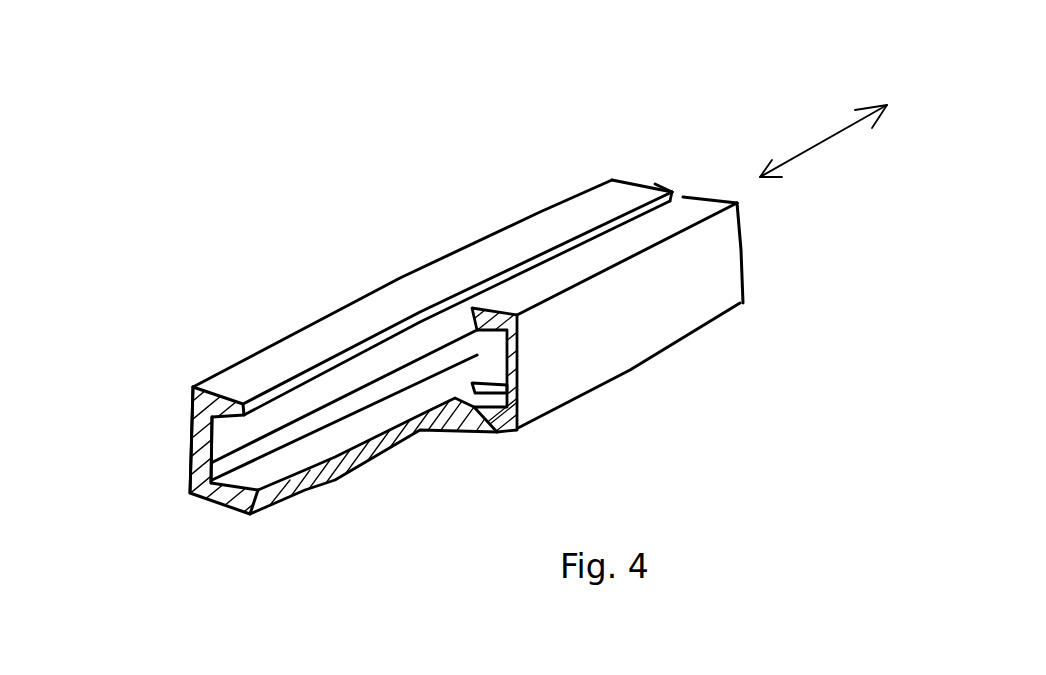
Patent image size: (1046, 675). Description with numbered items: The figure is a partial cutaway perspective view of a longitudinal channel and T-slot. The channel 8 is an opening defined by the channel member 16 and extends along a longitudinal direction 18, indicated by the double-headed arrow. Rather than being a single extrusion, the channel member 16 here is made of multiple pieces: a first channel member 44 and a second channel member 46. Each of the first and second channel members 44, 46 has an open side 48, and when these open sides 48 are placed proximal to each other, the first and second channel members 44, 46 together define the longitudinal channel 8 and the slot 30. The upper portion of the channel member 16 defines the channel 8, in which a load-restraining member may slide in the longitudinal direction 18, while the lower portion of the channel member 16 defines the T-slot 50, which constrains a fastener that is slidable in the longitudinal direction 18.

The channel 8 is at (213, 443).
The channel member 16 is at (335, 312).
The longitudinal direction 18 is at (837, 135).
The slot 30 is at (674, 190).
The first channel member 44 is at (633, 317).
The second channel member 46 is at (497, 232).
The open side 48 is at (443, 300).
The T-slot 50 is at (287, 463).